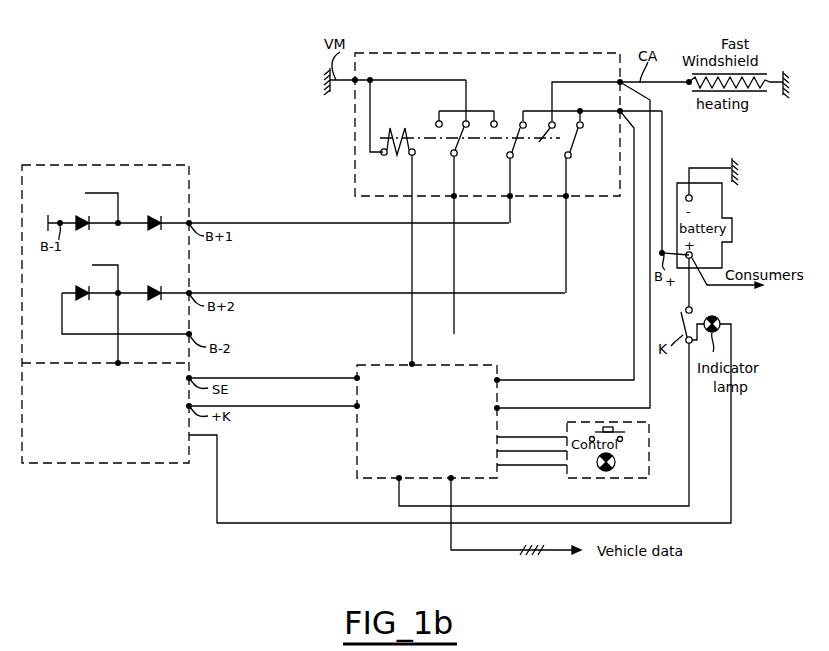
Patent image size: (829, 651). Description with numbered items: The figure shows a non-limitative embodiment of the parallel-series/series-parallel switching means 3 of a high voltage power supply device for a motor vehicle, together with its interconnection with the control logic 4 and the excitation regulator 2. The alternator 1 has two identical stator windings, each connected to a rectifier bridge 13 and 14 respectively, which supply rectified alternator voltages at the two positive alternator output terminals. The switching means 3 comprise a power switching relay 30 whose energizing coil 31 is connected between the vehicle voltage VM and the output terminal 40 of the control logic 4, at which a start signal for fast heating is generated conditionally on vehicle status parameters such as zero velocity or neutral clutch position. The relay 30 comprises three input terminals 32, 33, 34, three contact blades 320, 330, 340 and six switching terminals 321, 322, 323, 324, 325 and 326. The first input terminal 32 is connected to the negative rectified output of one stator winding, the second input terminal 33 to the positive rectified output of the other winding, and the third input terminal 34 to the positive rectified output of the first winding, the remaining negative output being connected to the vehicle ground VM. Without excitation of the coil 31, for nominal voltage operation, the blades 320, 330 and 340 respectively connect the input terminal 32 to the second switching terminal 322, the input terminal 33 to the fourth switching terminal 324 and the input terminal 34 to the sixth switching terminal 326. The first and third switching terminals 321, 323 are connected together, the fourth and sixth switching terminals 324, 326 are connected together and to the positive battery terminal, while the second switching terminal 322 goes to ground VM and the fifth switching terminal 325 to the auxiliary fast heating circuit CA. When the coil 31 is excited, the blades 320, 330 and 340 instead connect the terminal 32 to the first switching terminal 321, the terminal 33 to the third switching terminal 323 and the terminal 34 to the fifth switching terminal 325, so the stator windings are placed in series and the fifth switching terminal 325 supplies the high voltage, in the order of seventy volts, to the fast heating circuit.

The alternator 1 is at (172, 178).
The excitation regulator 2 is at (130, 445).
The parallel-series/series-parallel switching means 3 is at (362, 158).
The control logic 4 is at (357, 430).
The rectifier bridge 13 is at (130, 222).
The rectifier bridge 14 is at (130, 292).
The power switching relay 30 is at (368, 124).
The energizing coil 31 is at (394, 152).
The first input terminal 32 is at (455, 198).
The second input terminal 33 is at (511, 198).
The third input terminal 34 is at (567, 198).
The output terminal 40 is at (414, 364).
The contact blade 320 is at (430, 256).
The first switching terminal 321 is at (437, 120).
The second switching terminal 322 is at (473, 147).
The third switching terminal 323 is at (496, 120).
The fourth switching terminal 324 is at (536, 103).
The fifth switching terminal 325 is at (528, 151).
The sixth switching terminal 326 is at (590, 104).
The contact blade 330 is at (452, 141).
The contact blade 340 is at (571, 150).